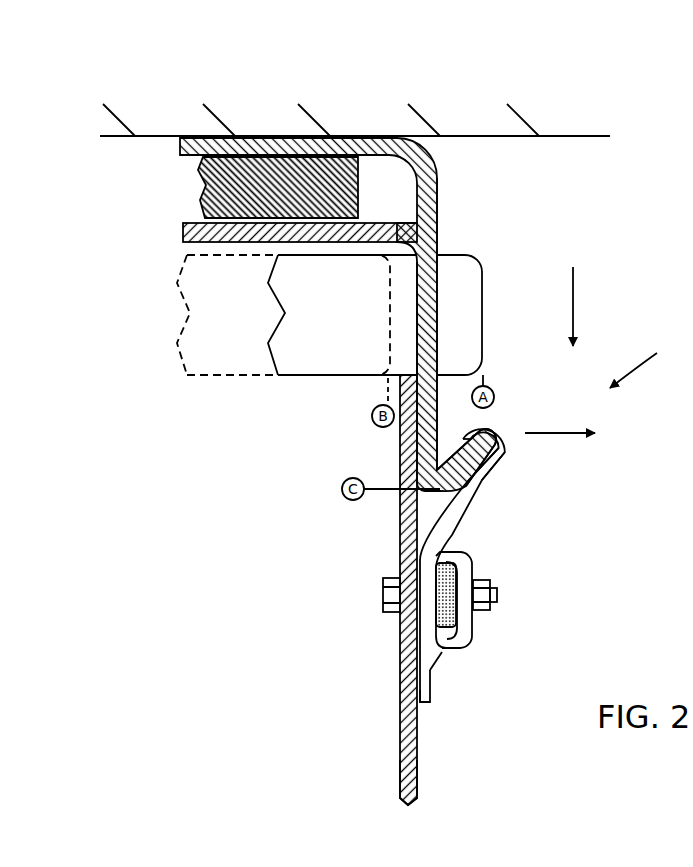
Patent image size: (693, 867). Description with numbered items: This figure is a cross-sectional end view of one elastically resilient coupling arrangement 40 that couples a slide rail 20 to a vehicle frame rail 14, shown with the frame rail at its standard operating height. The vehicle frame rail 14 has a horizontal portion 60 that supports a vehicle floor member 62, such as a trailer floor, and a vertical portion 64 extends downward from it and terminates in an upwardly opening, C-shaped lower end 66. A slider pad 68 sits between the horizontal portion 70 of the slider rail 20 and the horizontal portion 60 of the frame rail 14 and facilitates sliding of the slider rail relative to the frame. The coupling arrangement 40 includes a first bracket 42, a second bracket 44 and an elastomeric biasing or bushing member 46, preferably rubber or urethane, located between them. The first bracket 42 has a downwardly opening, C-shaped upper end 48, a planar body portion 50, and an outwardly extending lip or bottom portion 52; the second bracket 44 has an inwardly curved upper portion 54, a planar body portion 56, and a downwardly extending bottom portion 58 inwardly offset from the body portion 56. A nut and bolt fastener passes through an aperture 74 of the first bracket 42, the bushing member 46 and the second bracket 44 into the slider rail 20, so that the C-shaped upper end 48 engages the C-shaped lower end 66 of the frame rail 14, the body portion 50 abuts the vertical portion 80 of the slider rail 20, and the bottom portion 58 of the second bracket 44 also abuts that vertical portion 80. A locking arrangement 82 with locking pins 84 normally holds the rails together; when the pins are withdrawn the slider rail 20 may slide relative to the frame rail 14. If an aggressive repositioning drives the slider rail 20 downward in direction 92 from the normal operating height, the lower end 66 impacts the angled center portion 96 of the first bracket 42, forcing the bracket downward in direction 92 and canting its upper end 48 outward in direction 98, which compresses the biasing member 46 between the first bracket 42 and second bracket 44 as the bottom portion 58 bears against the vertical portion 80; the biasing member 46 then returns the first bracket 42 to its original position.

The vehicle frame rail 14 is at (365, 289).
The slide rail 20 is at (405, 590).
The coupling arrangement 40 is at (642, 360).
The first bracket 42 is at (493, 565).
The second bracket 44 is at (493, 574).
The biasing or bushing member 46 is at (457, 578).
The C-shaped upper end 48 is at (505, 423).
The planar body portion 50 is at (420, 597).
The lip or bottom portion 52 is at (435, 635).
The inwardly curved upper portion 54 is at (460, 560).
The planar body portion 56 is at (462, 618).
The downwardly extending bottom portion 58 is at (425, 685).
The horizontal portion 60 is at (283, 143).
The vehicle floor member 62 is at (560, 138).
The vertical portion 64 is at (428, 225).
The C-shaped lower end 66 is at (490, 450).
The slider pad 68 is at (343, 202).
The horizontal portion 70 is at (192, 225).
The aperture 74 is at (500, 597).
The vertical portion 80 is at (418, 782).
The locking arrangement 82 is at (488, 266).
The locking pin 84 is at (470, 317).
The downward direction 92 is at (573, 312).
The angled center portion 96 is at (470, 488).
The outward direction 98 is at (562, 432).